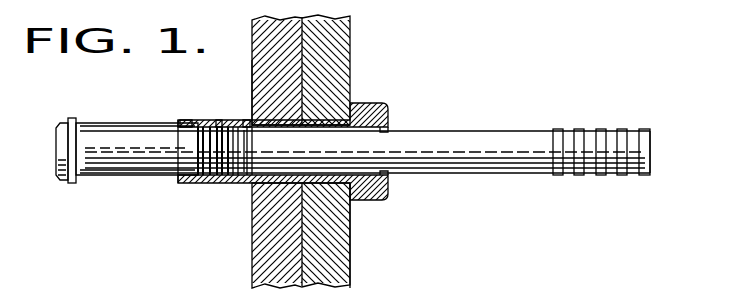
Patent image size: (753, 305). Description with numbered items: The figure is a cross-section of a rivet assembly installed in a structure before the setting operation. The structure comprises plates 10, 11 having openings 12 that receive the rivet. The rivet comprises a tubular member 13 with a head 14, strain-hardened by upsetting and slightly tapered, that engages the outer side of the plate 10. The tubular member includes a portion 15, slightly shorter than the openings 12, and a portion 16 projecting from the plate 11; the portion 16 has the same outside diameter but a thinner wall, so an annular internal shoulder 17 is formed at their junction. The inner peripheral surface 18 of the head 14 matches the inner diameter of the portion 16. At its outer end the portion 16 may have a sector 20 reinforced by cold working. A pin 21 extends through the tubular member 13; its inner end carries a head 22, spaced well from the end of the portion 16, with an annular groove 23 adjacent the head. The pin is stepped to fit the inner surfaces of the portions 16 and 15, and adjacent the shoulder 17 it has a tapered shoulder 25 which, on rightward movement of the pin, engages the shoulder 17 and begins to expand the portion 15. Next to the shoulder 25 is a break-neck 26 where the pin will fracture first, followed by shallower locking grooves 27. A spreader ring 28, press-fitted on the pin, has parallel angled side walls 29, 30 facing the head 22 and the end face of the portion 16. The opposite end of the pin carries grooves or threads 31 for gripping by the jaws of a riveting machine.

The plate 10 is at (343, 62).
The plate 11 is at (258, 66).
The openings 12 is at (333, 118).
The tubular member 13 is at (265, 188).
The head 14 is at (380, 197).
The portion 15 is at (333, 200).
The portion 16 is at (212, 184).
The annular internal shoulder 17 is at (250, 184).
The inner peripheral surface 18 is at (392, 125).
The sector 20 is at (197, 122).
The pin 21 is at (440, 140).
The head 22 is at (62, 180).
The annular groove 23 is at (88, 172).
The tapered shoulder 25 is at (246, 122).
The break-neck 26 is at (219, 121).
The locking grooves 27 is at (185, 179).
The spreader ring 28 is at (180, 125).
The side wall 29 is at (193, 128).
The side wall 30 is at (176, 122).
The grooves or threads 31 is at (560, 128).